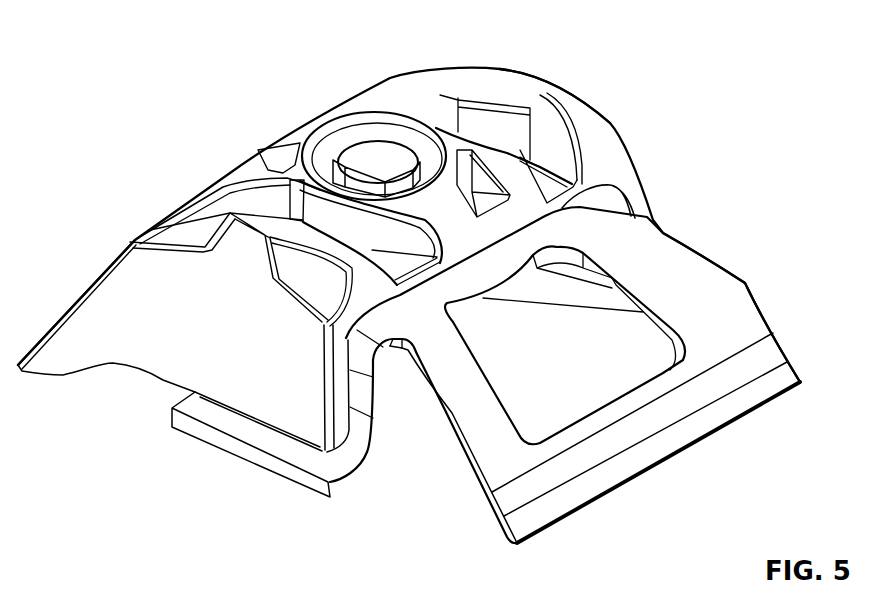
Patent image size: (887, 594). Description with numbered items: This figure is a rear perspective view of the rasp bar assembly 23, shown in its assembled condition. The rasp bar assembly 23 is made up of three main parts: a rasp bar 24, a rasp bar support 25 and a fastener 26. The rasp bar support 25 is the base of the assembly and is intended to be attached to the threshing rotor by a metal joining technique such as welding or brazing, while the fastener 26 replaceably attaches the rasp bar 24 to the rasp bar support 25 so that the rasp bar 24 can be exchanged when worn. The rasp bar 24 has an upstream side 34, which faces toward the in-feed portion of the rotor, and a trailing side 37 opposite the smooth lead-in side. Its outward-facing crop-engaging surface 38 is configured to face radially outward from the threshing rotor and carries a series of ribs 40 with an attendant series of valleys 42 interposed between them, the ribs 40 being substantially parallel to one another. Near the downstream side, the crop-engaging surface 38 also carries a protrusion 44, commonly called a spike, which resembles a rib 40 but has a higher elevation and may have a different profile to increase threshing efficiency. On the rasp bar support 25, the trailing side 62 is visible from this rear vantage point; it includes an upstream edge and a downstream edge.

The rasp bar assembly 23 is at (247, 50).
The rasp bar 24 is at (548, 91).
The rasp bar support 25 is at (750, 281).
The fastener 26 is at (382, 167).
The upstream side 34 is at (188, 362).
The trailing side 37 is at (627, 184).
The crop-engaging surface 38 is at (233, 177).
The ribs 40 is at (279, 150).
The valleys 42 is at (543, 178).
The protrusion 44 is at (411, 88).
The trailing side 62 is at (643, 275).